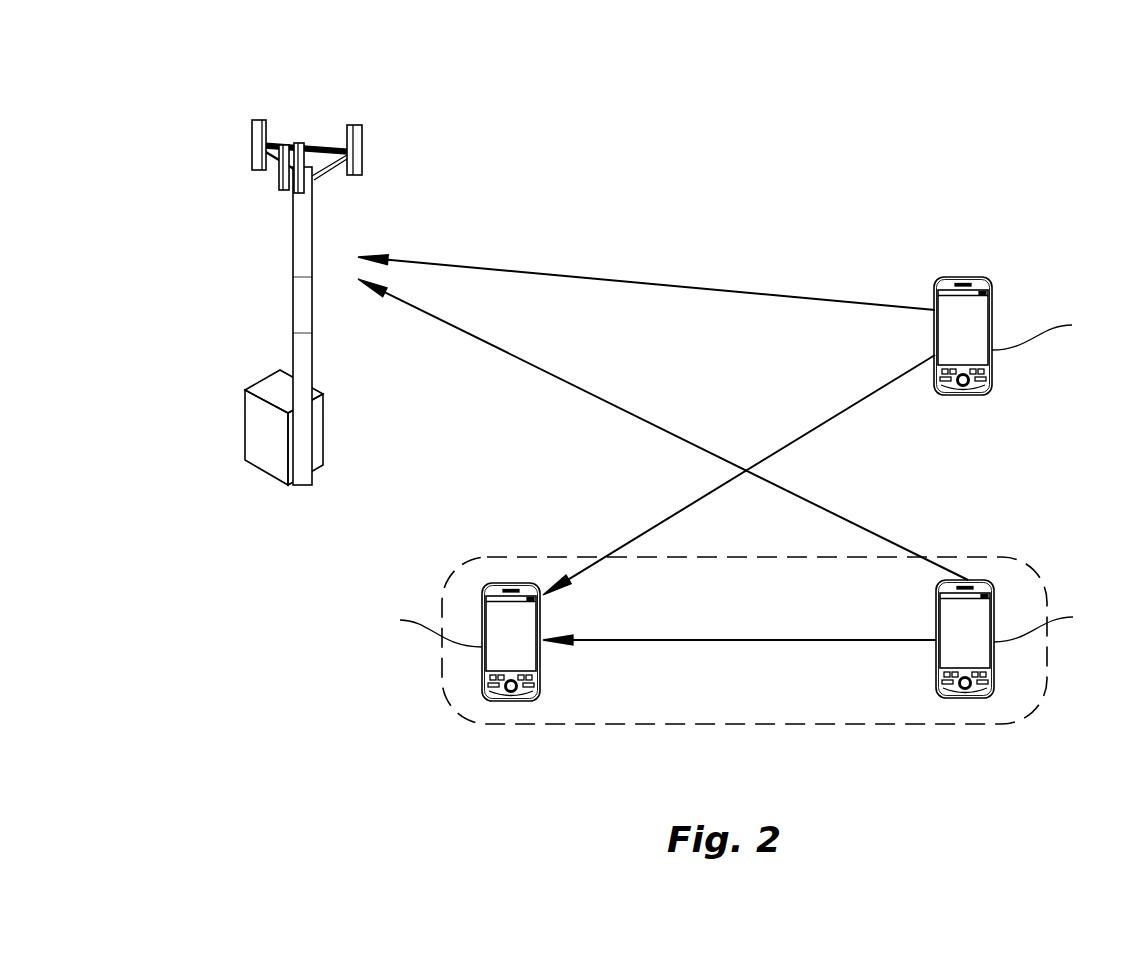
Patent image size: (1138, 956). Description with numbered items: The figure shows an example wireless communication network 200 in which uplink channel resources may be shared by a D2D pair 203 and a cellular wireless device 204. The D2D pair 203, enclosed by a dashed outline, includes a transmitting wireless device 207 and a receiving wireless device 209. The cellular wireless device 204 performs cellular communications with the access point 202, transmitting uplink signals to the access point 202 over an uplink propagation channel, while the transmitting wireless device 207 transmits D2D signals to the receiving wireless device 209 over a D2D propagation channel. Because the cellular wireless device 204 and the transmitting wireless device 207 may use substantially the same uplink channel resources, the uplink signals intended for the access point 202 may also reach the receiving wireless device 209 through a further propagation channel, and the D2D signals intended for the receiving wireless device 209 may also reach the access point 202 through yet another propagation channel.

The wireless communication network 200 is at (1016, 104).
The access point 202 is at (284, 100).
The D2D pair 203 is at (762, 736).
The cellular wireless device (CUE) 204 is at (992, 312).
The transmitting wireless device (DUE_T) 207 is at (994, 607).
The receiving wireless device (DUE_R) 209 is at (482, 612).